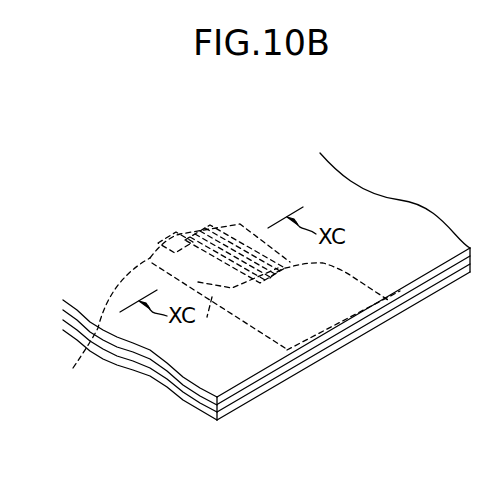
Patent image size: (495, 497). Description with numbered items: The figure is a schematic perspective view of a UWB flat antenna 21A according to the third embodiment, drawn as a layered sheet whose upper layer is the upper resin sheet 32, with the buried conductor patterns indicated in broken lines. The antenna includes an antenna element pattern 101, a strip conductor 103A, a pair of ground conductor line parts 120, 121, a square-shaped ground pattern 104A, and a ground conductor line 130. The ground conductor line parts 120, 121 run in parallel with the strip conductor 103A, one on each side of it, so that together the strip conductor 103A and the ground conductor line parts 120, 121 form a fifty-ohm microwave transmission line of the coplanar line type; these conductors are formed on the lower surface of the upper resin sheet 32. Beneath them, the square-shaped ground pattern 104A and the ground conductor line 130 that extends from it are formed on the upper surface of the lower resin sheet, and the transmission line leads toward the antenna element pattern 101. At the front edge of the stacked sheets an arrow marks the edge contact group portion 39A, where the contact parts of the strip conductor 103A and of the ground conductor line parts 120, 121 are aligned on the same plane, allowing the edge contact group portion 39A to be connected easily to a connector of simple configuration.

The UWB flat antenna 21A is at (177, 102).
The upper resin sheet 32 is at (337, 190).
The edge contact group portion 39A is at (214, 421).
The antenna element pattern 101 is at (360, 275).
The strip conductor 103A is at (212, 232).
The ground pattern 104A is at (207, 317).
The ground conductor line part 120 is at (243, 228).
The ground conductor line part 121 is at (170, 233).
The ground conductor line 130 is at (100, 327).